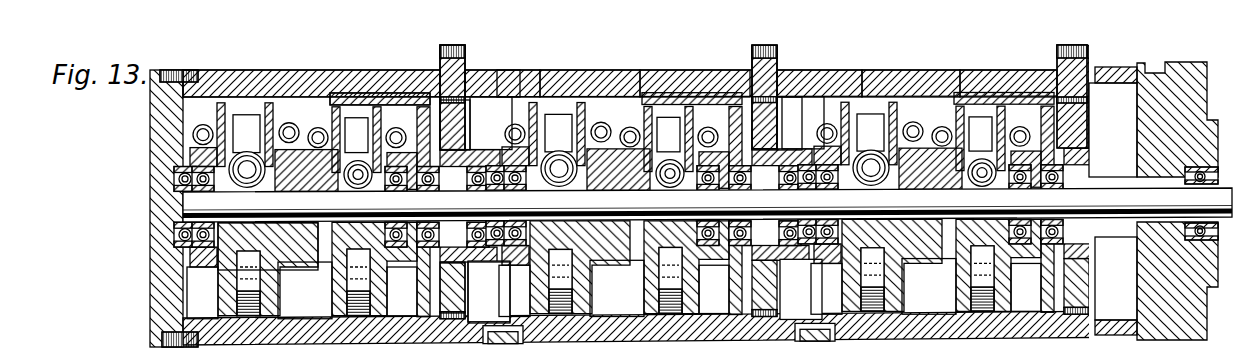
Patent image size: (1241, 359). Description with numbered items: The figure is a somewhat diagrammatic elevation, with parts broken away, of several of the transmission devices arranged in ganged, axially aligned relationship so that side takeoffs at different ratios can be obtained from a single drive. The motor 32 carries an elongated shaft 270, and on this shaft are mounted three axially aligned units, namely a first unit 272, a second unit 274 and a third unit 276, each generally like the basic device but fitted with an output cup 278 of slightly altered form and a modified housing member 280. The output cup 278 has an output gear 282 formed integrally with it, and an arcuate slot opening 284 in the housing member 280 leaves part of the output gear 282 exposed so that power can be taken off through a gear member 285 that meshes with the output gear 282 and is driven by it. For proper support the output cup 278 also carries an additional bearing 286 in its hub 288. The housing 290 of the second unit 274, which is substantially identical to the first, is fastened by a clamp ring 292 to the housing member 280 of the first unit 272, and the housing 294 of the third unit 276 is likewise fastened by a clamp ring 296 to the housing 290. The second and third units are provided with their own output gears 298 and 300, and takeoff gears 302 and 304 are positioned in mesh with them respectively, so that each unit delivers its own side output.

The motor 32 is at (165, 219).
The elongated shaft 270 is at (317, 217).
The first unit 272 is at (239, 61).
The second unit 274 is at (599, 64).
The third unit 276 is at (999, 66).
The output cup 278 is at (347, 94).
The housing member 280 is at (272, 95).
The output gear 282 is at (456, 131).
The arcuate slot opening 284 is at (507, 86).
The gear member 285 is at (438, 55).
The additional bearing 286 is at (483, 263).
The hub 288 is at (473, 263).
The housing 290 is at (654, 73).
The clamp ring 292 is at (520, 83).
The housing 294 is at (910, 73).
The clamp ring 296 is at (810, 73).
The output gear 298 is at (777, 130).
The output gear 300 is at (1083, 128).
The takeoff gear 302 is at (750, 55).
The takeoff gear 304 is at (1060, 55).